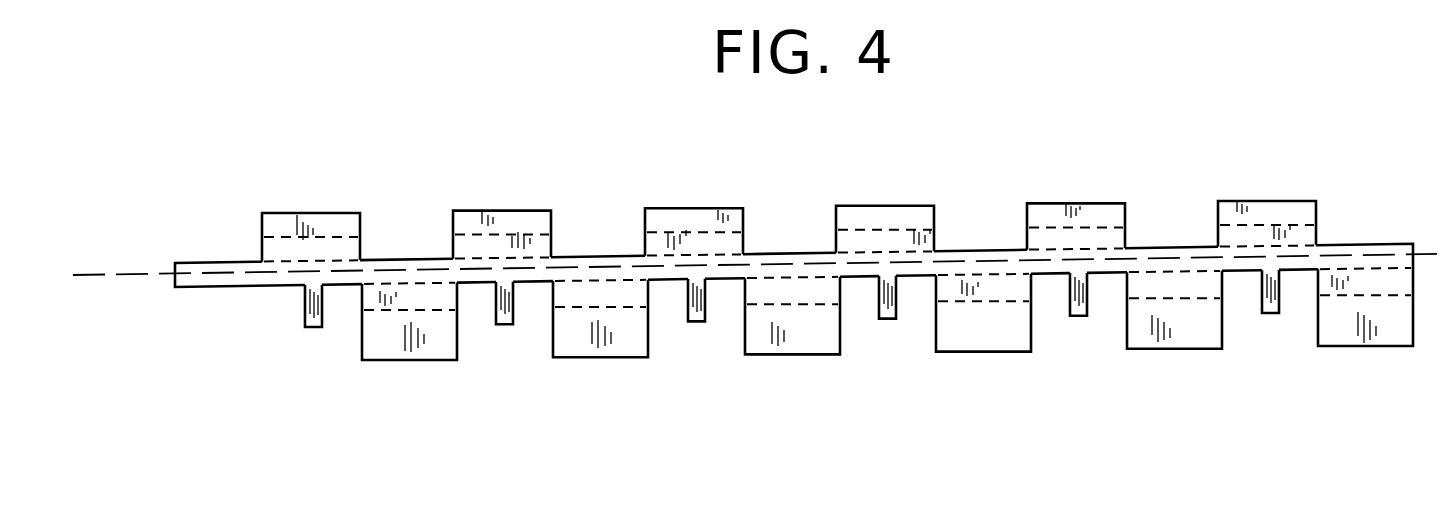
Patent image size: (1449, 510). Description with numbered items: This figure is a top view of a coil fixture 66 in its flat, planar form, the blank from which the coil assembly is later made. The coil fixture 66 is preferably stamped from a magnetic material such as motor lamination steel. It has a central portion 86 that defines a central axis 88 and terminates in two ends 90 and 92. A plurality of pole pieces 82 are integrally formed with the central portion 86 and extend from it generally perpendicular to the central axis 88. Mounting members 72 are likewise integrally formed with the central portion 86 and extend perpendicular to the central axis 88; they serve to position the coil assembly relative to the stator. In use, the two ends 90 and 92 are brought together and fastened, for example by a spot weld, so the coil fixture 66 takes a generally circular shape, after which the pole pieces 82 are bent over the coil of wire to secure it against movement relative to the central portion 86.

The coil fixture 66 is at (1015, 149).
The mounting members 72 is at (317, 328).
The pole pieces 82 is at (680, 208).
The central portion 86 is at (242, 262).
The central axis 88 is at (87, 277).
The first end 90 is at (195, 290).
The second end 92 is at (1373, 243).